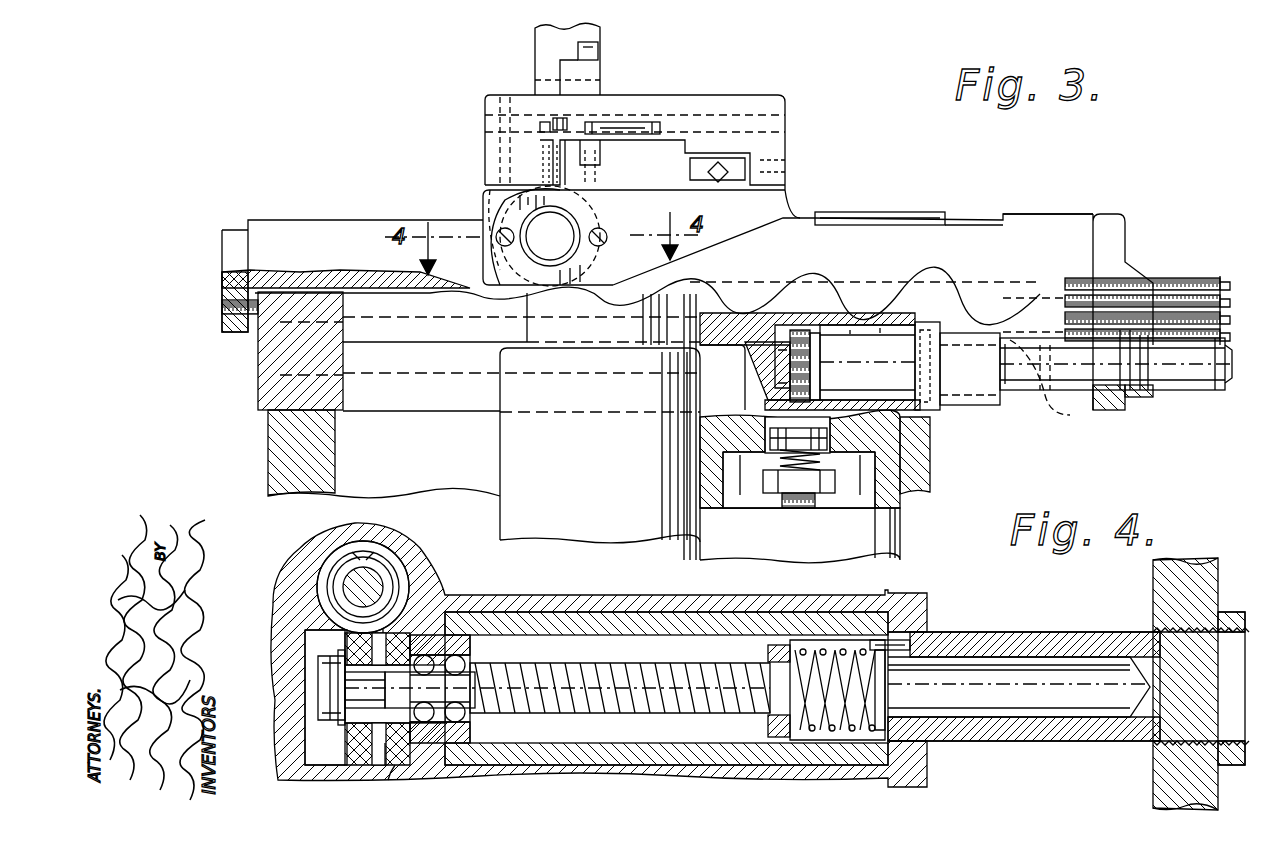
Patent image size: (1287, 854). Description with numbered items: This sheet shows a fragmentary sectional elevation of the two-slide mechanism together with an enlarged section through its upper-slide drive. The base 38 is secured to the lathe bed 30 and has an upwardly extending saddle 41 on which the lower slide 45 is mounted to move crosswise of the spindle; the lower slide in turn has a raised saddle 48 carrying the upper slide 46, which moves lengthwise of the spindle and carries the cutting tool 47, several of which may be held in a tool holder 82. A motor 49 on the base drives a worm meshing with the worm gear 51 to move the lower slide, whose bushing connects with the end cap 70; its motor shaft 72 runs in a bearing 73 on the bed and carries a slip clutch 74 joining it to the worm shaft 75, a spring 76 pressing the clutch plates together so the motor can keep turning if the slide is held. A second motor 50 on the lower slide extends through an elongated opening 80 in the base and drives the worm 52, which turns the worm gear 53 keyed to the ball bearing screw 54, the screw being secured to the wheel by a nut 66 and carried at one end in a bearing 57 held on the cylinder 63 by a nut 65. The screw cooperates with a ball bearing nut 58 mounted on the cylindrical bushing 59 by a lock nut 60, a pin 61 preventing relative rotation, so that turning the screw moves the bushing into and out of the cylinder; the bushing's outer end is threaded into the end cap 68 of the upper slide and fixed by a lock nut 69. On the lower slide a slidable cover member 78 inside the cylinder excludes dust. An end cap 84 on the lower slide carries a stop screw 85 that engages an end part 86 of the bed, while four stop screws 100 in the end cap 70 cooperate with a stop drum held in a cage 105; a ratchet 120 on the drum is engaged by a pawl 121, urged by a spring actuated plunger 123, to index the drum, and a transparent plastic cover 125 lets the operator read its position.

In FIG. 3, the bed 30 is at (270, 443).
In FIG. 3, the base 38 is at (393, 374).
In FIG. 3, the saddle 41 is at (322, 300).
In FIG. 3, the lower slide 45 is at (1050, 222).
In FIG. 3, the upper slide 46 is at (785, 132).
In FIG. 3, the cutting tool 47 is at (595, 50).
In FIG. 3, the saddle 48 is at (695, 140).
In FIG. 4, the saddle 48 is at (620, 600).
In FIG. 3, the motor 49 is at (700, 548).
In FIG. 3, the motor 50 is at (500, 440).
In FIG. 3, the worm gear 51 is at (818, 325).
In FIG. 4, the worm 52 is at (325, 545).
In FIG. 4, the worm gear 53 is at (290, 640).
In FIG. 4, the ball bearing screw 54 is at (595, 712).
In FIG. 4, the bearing 57 is at (508, 612).
In FIG. 3, the ball bearing nut 58 is at (1068, 415).
In FIG. 4, the ball bearing nut 58 is at (832, 760).
In FIG. 3, the cylindrical bushing 59 is at (1210, 398).
In FIG. 4, the cylindrical bushing 59 is at (1058, 635).
In FIG. 4, the lock nut 60 is at (770, 718).
In FIG. 4, the pin 61 is at (905, 645).
In FIG. 3, the cylinder 63 is at (895, 322).
In FIG. 4, the cylinder 63 is at (710, 778).
In FIG. 4, the nut 65 is at (388, 780).
In FIG. 4, the nut 66 is at (330, 690).
In FIG. 3, the end cap 68 is at (604, 212).
In FIG. 4, the end cap 68 is at (1205, 560).
In FIG. 3, the lock nut 69 is at (500, 210).
In FIG. 4, the lock nut 69 is at (1240, 620).
In FIG. 3, the end cap 70 is at (1118, 235).
In FIG. 3, the motor shaft 72 is at (790, 500).
In FIG. 3, the bearing 73 is at (770, 485).
In FIG. 3, the slip clutch 74 is at (830, 432).
In FIG. 3, the shaft 75 is at (700, 427).
In FIG. 3, the spring 76 is at (885, 462).
In FIG. 3, the cover member 78 is at (995, 400).
In FIG. 3, the elongated opening 80 is at (700, 292).
In FIG. 3, the tool holder 82 is at (533, 57).
In FIG. 3, the end cap 84 is at (222, 257).
In FIG. 3, the stop screw 85 is at (232, 330).
In FIG. 3, the end part 86 is at (258, 360).
In FIG. 3, the stop screws 100 is at (1214, 278).
In FIG. 3, the cage 105 is at (612, 152).
In FIG. 3, the ratchet 120 is at (640, 125).
In FIG. 3, the pawl 121 is at (565, 120).
In FIG. 3, the spring actuated plunger 123 is at (540, 127).
In FIG. 3, the transparent plastic cover 125 is at (915, 215).